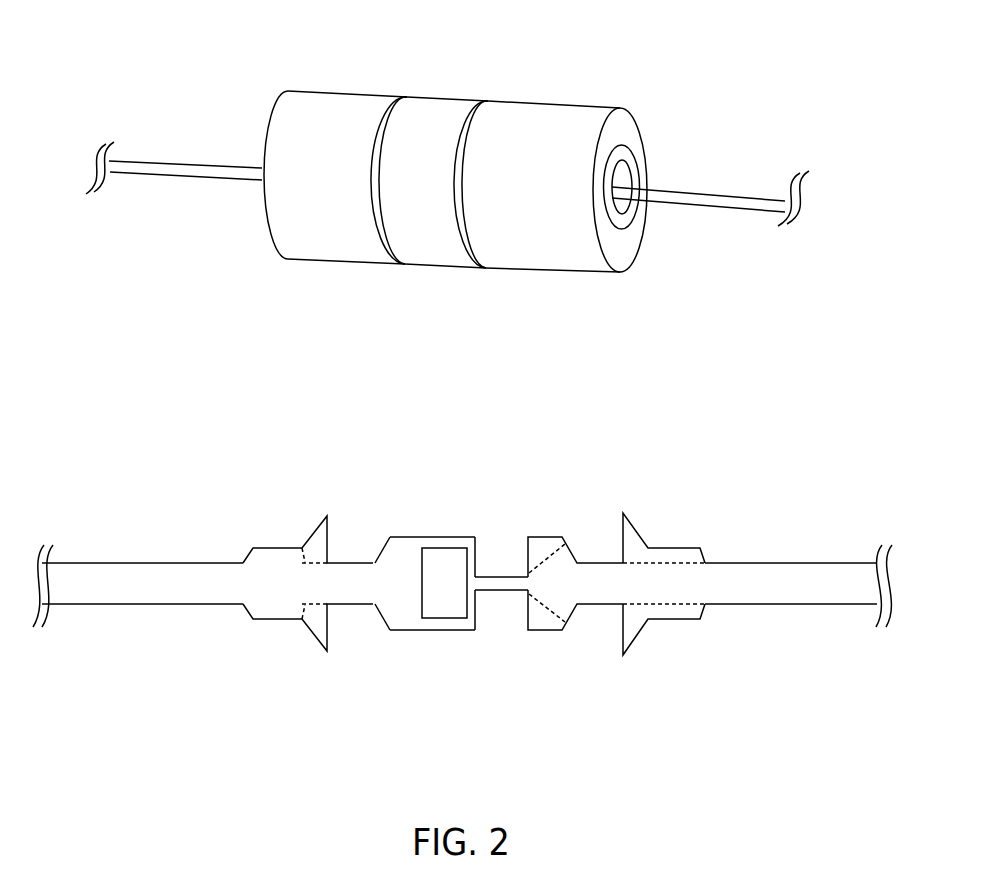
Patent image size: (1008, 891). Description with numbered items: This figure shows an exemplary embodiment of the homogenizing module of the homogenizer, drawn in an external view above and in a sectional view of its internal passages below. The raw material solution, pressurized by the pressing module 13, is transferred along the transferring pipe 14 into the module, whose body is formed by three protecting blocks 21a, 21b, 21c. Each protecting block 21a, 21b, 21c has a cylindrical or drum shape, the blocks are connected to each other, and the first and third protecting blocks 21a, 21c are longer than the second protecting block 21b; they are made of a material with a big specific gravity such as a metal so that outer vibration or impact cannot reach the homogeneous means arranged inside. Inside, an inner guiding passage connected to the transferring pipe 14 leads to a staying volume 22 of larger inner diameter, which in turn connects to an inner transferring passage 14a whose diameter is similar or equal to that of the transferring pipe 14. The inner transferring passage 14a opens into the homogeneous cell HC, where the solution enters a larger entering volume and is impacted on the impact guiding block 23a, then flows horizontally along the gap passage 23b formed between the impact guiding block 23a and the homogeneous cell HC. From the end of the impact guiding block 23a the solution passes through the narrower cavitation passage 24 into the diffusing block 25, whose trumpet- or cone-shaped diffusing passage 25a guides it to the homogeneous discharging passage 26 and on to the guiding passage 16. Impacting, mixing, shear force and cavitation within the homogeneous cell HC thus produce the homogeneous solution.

The pressing module 13 is at (308, 72).
The transferring pipe 14 is at (168, 162).
The inner transferring passage 14a is at (348, 563).
The guiding passage 16 is at (690, 188).
The first protecting block 21a is at (337, 93).
The second protecting block 21b is at (442, 100).
The third protecting block 21c is at (550, 105).
The staying volume 22 is at (272, 548).
The impact guiding block 23a is at (430, 619).
The gap passage 23b is at (440, 548).
The cavitation passage 24 is at (500, 577).
The diffusing block 25 is at (548, 537).
The diffusing passage 25a is at (550, 612).
The homogeneous discharging passage 26 is at (655, 563).
The homogeneous cell HC is at (377, 636).